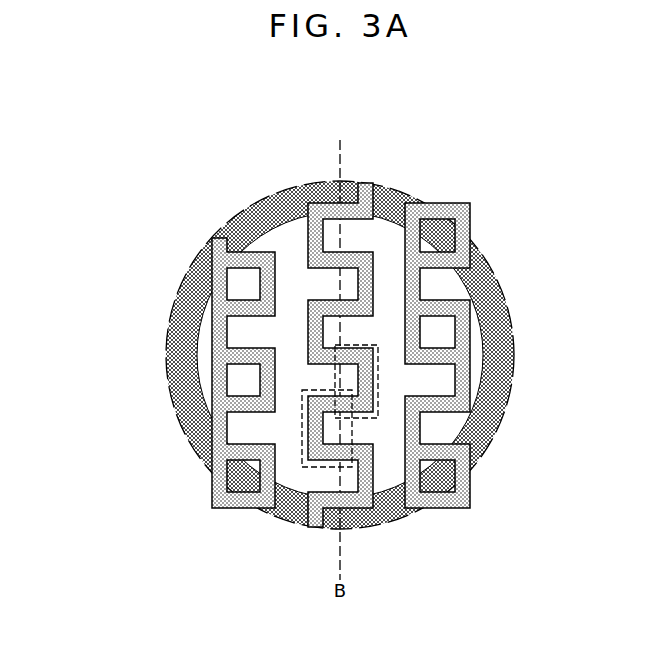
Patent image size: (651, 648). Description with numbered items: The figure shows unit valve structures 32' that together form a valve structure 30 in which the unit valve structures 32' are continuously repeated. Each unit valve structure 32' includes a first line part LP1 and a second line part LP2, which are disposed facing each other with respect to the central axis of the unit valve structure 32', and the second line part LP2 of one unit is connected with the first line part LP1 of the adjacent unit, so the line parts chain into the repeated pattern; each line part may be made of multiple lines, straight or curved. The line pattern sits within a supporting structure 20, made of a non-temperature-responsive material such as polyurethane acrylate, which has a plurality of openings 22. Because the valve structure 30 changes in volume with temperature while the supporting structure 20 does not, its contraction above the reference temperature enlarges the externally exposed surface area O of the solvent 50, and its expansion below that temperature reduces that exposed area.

The supporting structure 20 is at (505, 373).
The openings 22 is at (505, 332).
The valve structure 30 is at (317, 332).
The solvent 50 is at (440, 426).
The externally exposed surface area O is at (426, 287).
The first line part LP1 is at (360, 375).
The second line part LP2 is at (317, 428).
The unit valve structure 32' is at (61, 402).